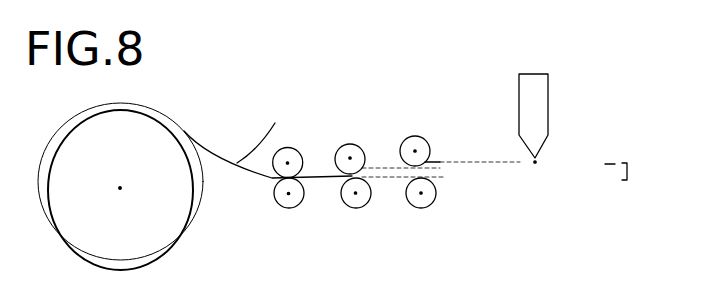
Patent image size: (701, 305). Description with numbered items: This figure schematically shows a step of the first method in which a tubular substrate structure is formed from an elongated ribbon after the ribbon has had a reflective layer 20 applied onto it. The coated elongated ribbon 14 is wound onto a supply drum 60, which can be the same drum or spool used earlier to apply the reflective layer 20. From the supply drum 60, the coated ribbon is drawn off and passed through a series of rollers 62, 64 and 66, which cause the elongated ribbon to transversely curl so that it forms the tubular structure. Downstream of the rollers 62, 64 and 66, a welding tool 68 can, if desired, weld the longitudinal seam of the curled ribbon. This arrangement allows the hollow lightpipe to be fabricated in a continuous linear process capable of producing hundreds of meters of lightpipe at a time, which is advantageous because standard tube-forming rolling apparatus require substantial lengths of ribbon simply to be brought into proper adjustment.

The web 14 is at (223, 158).
The reflective layer 20 is at (264, 136).
The supply drum 60 is at (140, 145).
The roller 62 is at (297, 152).
The roller 64 is at (360, 140).
The roller 66 is at (415, 137).
The welding tool 68 is at (506, 118).